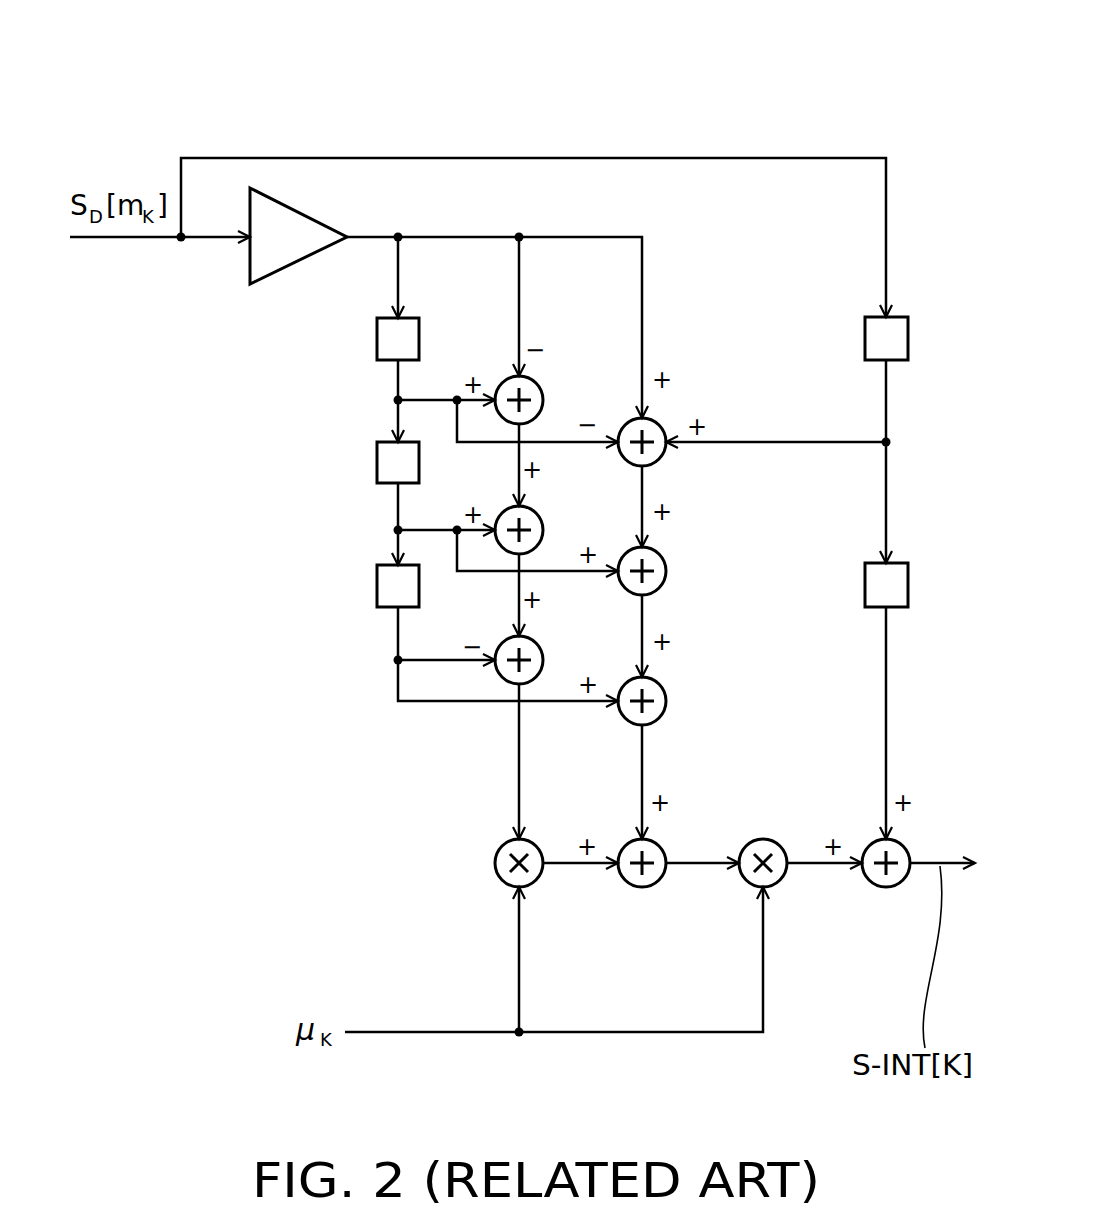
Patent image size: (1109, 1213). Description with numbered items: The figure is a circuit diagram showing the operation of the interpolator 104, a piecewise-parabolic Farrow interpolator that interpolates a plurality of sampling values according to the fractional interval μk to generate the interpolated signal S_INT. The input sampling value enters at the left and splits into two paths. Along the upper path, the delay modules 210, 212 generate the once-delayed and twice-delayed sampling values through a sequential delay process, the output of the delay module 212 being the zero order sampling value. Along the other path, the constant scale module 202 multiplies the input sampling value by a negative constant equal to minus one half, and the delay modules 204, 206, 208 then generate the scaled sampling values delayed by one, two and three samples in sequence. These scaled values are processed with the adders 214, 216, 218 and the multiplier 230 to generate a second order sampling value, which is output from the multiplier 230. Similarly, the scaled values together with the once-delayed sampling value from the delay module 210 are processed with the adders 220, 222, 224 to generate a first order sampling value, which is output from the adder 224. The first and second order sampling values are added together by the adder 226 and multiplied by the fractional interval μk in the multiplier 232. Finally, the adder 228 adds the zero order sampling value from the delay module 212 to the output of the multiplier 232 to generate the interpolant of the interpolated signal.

The interpolator 104 is at (722, 105).
The constant scale module 202 is at (302, 210).
The delay module 204 is at (377, 340).
The delay module 206 is at (377, 460).
The delay module 208 is at (377, 585).
The delay module 210 is at (908, 335).
The delay module 212 is at (908, 580).
The adder 214 is at (541, 385).
The adder 216 is at (541, 515).
The adder 218 is at (541, 648).
The adder 220 is at (664, 428).
The adder 222 is at (664, 558).
The adder 224 is at (664, 688).
The adder 226 is at (642, 890).
The adder 228 is at (890, 890).
The multiplier 230 is at (505, 883).
The multiplier 232 is at (780, 885).